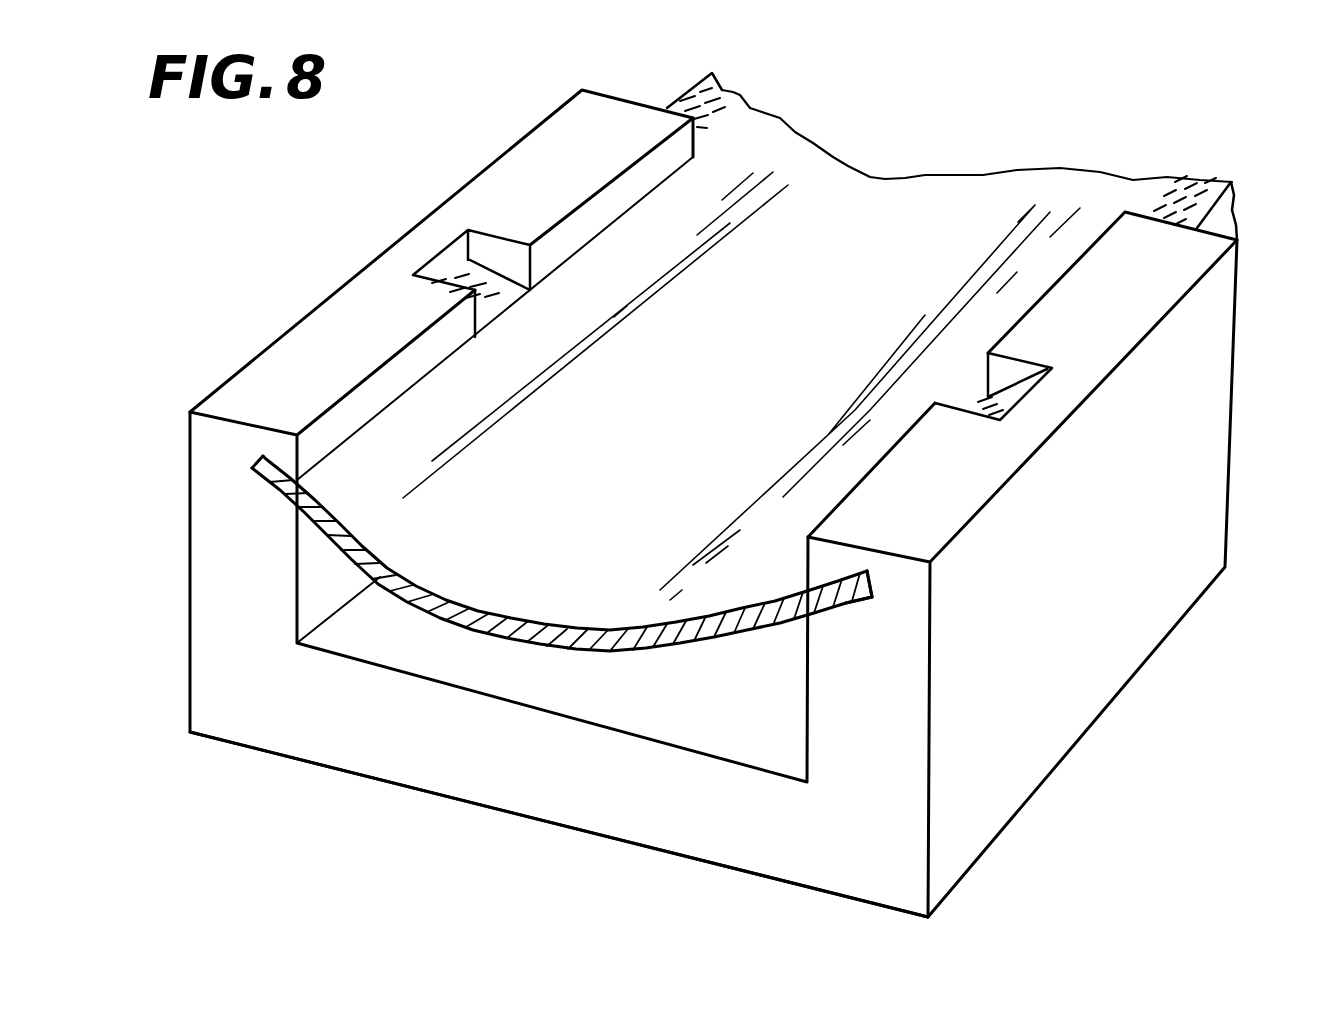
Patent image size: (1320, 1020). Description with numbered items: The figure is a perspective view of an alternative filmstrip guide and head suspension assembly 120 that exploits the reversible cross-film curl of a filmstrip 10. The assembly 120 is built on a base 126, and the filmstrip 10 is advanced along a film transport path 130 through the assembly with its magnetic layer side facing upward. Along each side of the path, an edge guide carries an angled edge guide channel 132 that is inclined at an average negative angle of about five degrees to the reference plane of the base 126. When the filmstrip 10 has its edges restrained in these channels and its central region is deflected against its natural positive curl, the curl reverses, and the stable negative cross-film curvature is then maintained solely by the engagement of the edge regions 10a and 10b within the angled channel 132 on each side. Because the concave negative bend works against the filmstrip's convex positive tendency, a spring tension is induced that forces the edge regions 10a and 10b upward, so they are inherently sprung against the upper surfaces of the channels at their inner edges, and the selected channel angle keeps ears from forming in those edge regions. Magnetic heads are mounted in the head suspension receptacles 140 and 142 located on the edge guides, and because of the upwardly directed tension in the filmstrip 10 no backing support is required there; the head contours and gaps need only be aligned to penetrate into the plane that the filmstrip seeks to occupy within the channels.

The filmstrip 10 is at (894, 190).
The edge region 10a is at (1213, 184).
The edge region 10b is at (718, 90).
The filmstrip guide and head suspension assembly 120 is at (1158, 747).
The base 126 is at (396, 773).
The film transport path 130 is at (292, 508).
The angled edge guide channel 132 is at (856, 606).
The head suspension receptacle 140 is at (1023, 371).
The head suspension receptacle 142 is at (451, 258).